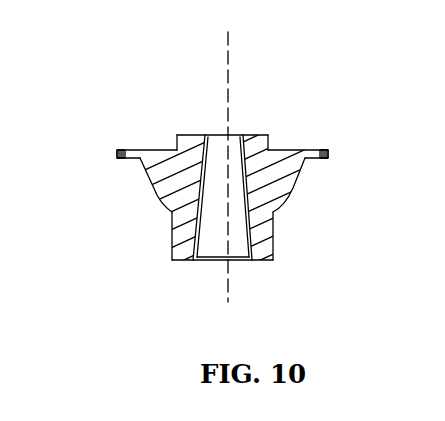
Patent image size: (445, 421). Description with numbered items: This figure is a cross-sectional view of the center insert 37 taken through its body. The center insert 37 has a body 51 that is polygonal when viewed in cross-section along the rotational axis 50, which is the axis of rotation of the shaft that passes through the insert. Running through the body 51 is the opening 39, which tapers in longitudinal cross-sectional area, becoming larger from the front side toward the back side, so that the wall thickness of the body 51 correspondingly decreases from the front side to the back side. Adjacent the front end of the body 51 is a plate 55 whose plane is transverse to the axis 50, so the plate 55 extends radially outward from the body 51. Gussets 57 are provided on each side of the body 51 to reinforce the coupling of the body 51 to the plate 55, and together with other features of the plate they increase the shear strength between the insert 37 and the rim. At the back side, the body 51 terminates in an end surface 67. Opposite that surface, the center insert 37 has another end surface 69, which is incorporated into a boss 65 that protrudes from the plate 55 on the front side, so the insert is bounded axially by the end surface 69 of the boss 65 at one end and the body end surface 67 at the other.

The rotational axis 50 is at (228, 48).
The polygonal body 51 is at (249, 215).
The end surface 69 is at (269, 106).
The boss 65 is at (117, 119).
The plate 55 is at (192, 177).
The gussets 57 is at (226, 204).
The opening 39 is at (207, 229).
The center insert 37 is at (150, 279).
The end surface 67 is at (301, 293).